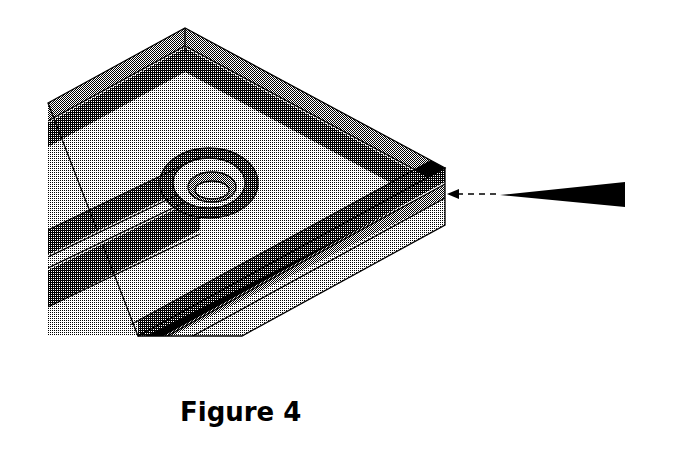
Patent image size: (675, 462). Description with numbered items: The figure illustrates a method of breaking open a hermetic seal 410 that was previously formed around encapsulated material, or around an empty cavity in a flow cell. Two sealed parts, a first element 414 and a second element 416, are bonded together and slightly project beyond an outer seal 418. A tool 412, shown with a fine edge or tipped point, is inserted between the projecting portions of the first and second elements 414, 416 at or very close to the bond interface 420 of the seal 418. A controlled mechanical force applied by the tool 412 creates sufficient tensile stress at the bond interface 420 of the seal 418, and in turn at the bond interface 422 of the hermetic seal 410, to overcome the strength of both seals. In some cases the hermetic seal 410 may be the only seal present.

The hermetic seal 410 is at (220, 162).
The tool 412 is at (518, 192).
The first element 414 is at (220, 50).
The second element 416 is at (317, 285).
The seal 418 is at (313, 135).
The bond interface 420 is at (440, 183).
The bond interface 422 is at (262, 185).